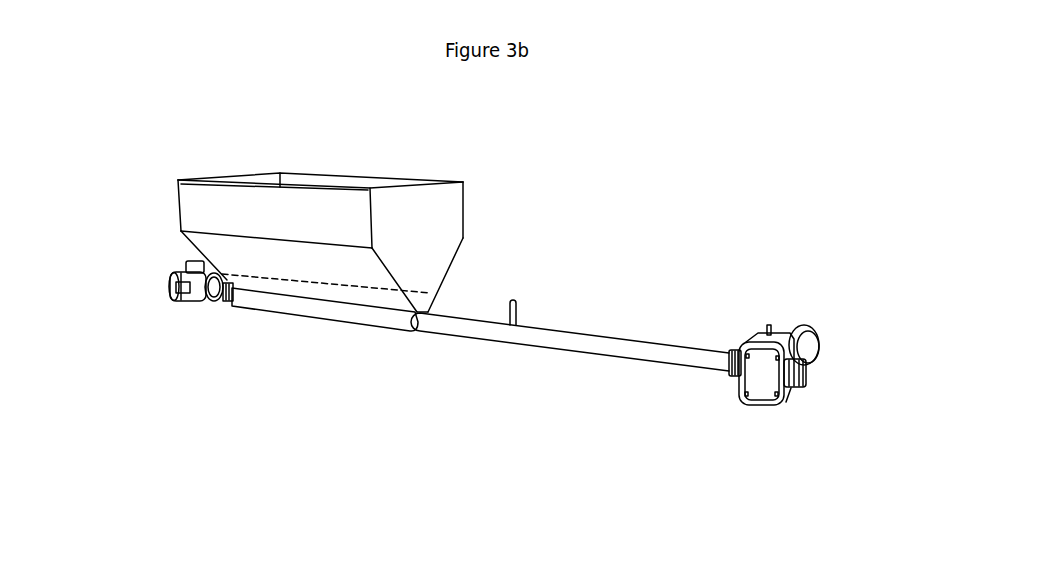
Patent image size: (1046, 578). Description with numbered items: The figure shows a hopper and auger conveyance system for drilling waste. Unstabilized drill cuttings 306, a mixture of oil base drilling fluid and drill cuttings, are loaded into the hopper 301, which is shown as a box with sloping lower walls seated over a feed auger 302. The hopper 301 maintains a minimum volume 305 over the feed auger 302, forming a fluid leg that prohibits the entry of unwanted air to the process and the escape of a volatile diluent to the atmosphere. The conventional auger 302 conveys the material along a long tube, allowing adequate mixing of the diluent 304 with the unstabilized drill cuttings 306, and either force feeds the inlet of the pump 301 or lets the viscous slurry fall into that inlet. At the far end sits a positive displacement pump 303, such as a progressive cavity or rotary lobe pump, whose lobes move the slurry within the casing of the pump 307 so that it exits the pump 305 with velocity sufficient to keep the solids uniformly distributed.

The hopper 301 is at (463, 200).
The feed auger 302 is at (555, 340).
The positive displacement pump 303 is at (749, 379).
The diluent 304 is at (513, 293).
The minimum volume 305 is at (333, 288).
The unstabilized drill cuttings 306 is at (320, 163).
The casing of the pump 307 is at (757, 338).